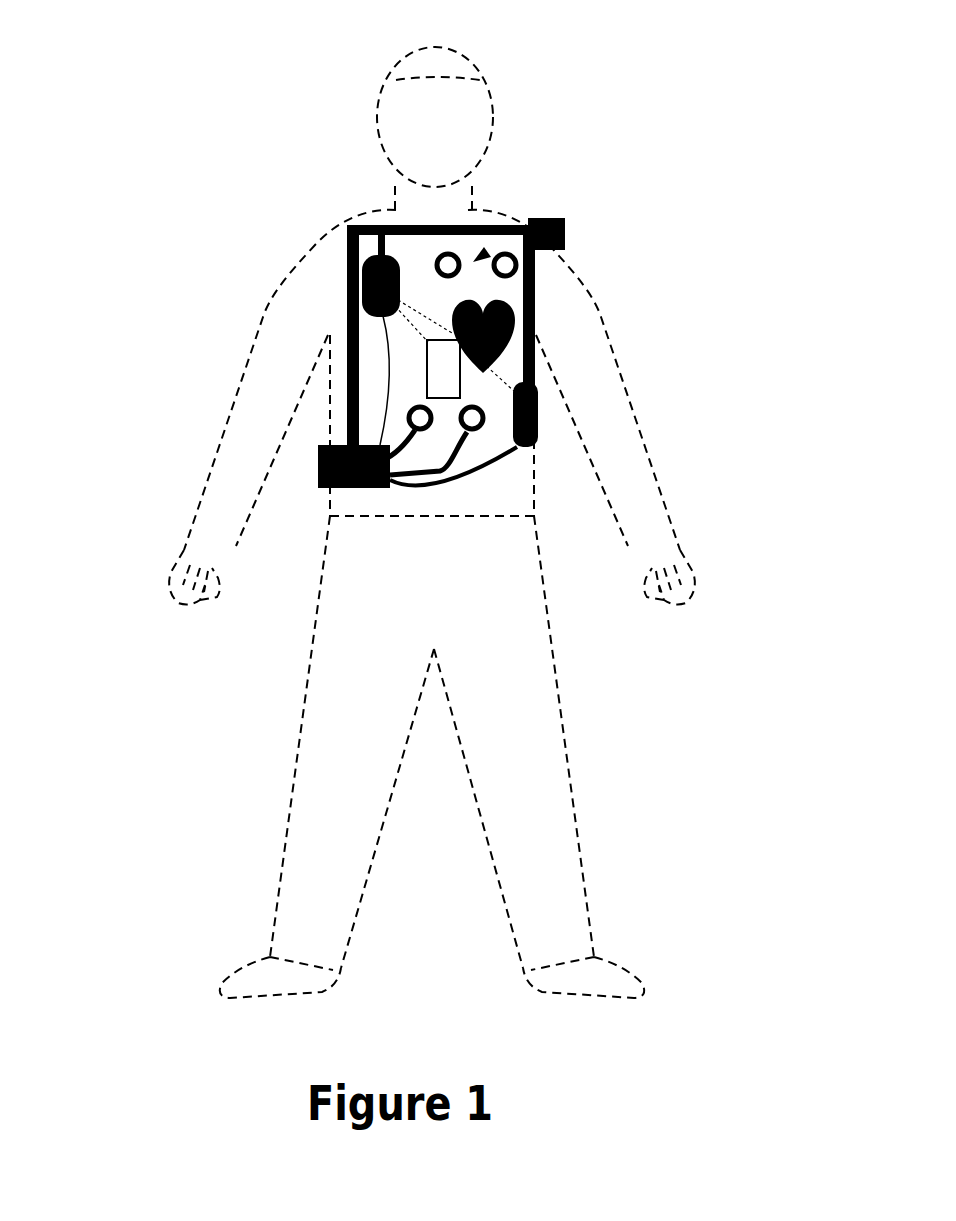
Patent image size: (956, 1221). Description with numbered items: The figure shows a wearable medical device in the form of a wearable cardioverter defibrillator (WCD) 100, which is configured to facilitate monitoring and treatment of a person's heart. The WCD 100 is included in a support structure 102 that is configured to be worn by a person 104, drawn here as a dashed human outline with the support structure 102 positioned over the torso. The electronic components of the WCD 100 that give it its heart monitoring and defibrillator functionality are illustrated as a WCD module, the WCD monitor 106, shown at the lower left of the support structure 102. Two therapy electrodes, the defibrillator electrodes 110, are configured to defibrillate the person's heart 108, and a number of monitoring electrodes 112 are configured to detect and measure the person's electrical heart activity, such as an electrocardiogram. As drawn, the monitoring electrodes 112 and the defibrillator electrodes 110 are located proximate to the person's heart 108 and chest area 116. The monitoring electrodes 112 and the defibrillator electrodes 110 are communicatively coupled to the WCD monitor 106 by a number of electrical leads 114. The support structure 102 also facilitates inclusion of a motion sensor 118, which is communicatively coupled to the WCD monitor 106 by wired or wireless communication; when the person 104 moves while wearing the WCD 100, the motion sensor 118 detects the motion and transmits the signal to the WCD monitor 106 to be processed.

The wearable cardioverter defibrillator 100 is at (513, 27).
The support structure 102 is at (493, 230).
The person 104 is at (378, 88).
The WCD monitor 106 is at (355, 488).
The heart 108 is at (512, 325).
The defibrillator electrodes 110 is at (369, 269).
The monitoring electrodes 112 is at (441, 257).
The electrical leads 114 is at (390, 352).
The chest area 116 is at (484, 250).
The motion sensor 118 is at (465, 385).